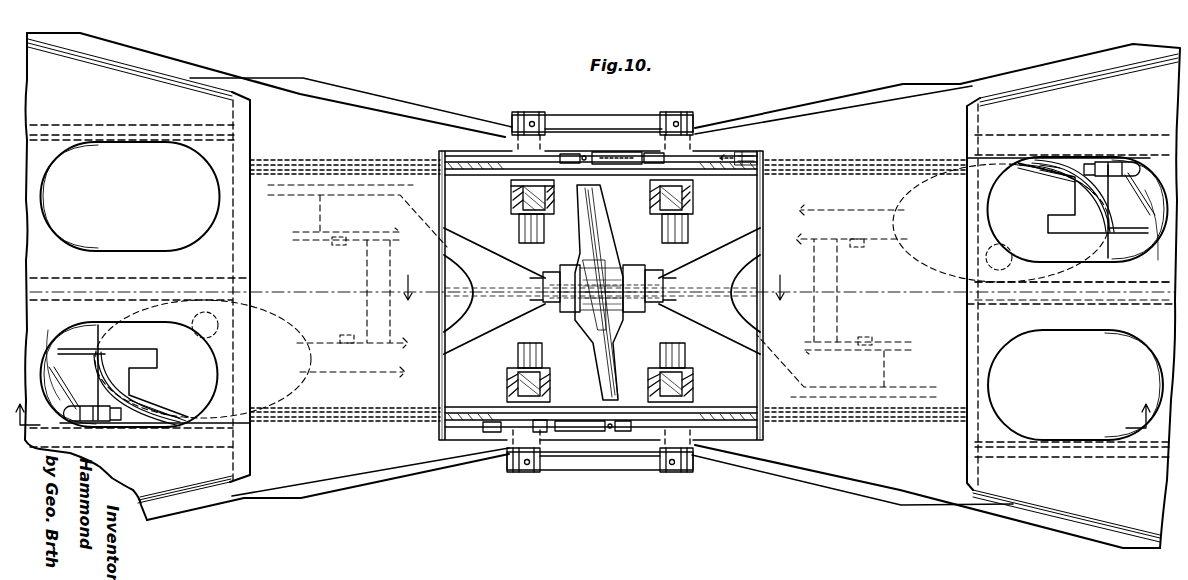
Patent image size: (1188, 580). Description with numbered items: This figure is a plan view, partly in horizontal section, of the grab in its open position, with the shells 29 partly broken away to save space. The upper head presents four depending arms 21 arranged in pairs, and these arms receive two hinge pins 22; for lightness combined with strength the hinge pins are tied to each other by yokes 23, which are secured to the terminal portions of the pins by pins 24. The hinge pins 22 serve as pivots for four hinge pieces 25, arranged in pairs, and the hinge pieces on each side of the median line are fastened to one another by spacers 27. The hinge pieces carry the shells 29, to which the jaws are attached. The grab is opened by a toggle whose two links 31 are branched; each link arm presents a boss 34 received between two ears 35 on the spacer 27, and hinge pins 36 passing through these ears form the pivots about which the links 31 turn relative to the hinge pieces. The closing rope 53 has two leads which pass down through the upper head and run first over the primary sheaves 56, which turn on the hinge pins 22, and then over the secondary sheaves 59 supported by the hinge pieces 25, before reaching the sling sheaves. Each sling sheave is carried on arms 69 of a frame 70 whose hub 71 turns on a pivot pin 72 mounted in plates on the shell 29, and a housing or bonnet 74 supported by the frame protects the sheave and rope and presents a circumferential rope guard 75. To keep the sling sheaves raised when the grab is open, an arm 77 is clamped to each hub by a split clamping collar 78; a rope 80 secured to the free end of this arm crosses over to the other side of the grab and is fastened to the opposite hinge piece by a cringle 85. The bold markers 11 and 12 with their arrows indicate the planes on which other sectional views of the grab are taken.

The section line 11- 11 is at (583, 408).
The section line 12- 12 is at (594, 279).
The depending arm 21 is at (514, 204).
The hinge pin 22 is at (519, 231).
The yoke 23 is at (605, 111).
The pin 24 is at (532, 122).
The hinge piece 25 is at (402, 106).
The spacer 27 is at (443, 206).
The shell 29 is at (154, 60).
The toggle link 31 is at (538, 306).
The ear or boss 34 is at (312, 218).
The ear or boss 35 is at (350, 196).
The hinge pin 36 is at (338, 248).
The closing rope 53 is at (470, 292).
The primary sheave 56 is at (487, 171).
The secondary sheave 59 is at (384, 160).
The arm 69 is at (116, 354).
The frame 70 is at (1143, 206).
The hub 71 is at (82, 388).
The pivot pin 72 is at (1118, 294).
The housing or bonnet 74 is at (188, 398).
The circumferential rope guard 75 is at (1052, 170).
The arm 77 is at (1075, 160).
The clamping collar 78 is at (103, 428).
The rope 80 is at (718, 150).
The cringle 85 is at (580, 149).